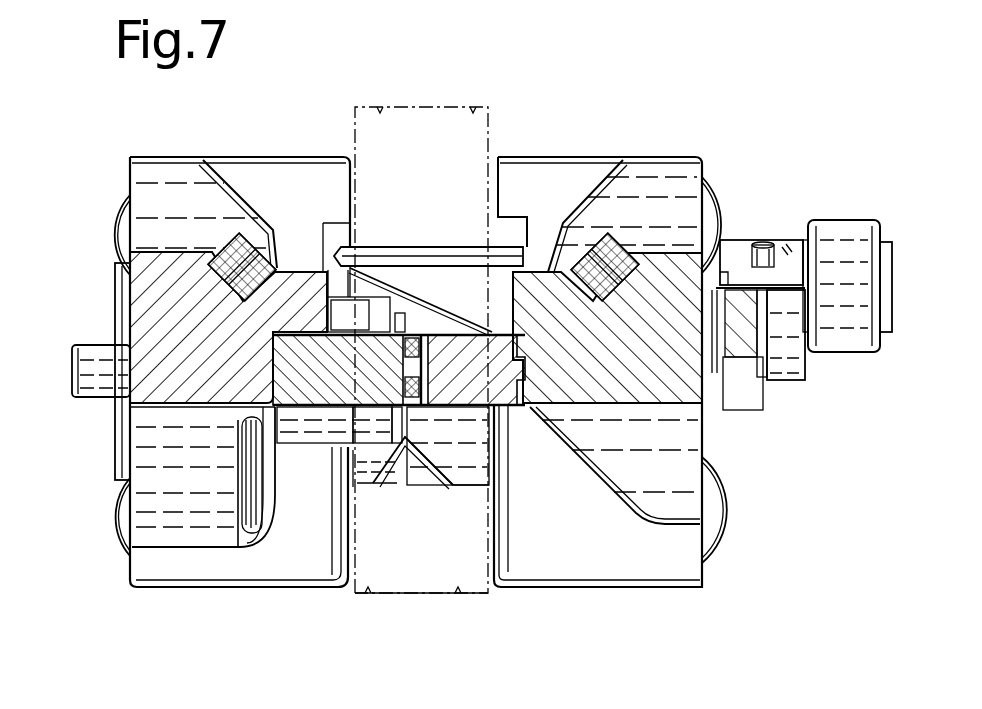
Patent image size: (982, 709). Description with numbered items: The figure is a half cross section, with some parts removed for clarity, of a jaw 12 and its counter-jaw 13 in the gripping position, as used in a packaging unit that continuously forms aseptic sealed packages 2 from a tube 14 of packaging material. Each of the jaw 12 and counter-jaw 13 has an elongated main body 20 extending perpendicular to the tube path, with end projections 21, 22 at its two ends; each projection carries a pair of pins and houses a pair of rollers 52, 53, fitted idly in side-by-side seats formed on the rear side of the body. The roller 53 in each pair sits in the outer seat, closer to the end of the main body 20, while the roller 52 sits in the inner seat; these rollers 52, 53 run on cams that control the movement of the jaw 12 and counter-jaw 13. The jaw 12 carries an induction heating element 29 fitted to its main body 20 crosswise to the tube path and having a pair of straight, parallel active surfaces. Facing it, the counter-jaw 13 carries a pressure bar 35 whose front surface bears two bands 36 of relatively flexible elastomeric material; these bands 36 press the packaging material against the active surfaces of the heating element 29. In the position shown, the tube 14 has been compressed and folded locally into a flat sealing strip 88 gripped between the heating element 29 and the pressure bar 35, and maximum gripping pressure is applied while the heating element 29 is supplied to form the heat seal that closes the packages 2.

The aseptic sealed package 2 is at (478, 606).
The jaw 12 is at (652, 150).
The counter-jaw 13 is at (270, 150).
The tube 14 is at (476, 147).
The main body 20 is at (153, 310).
The end projection 21 is at (593, 550).
The end projection 22 is at (303, 555).
The induction heating element 29 is at (470, 363).
The pressure bar 35 is at (358, 350).
The band 36 is at (413, 333).
The roller 52 is at (122, 228).
The roller 53 is at (122, 507).
The flat sealing strip 88 is at (432, 408).